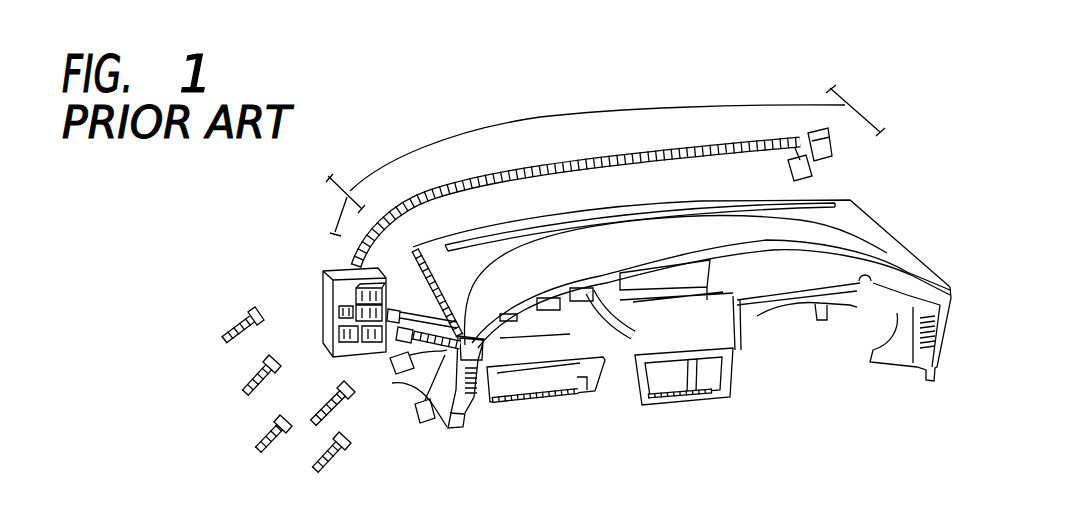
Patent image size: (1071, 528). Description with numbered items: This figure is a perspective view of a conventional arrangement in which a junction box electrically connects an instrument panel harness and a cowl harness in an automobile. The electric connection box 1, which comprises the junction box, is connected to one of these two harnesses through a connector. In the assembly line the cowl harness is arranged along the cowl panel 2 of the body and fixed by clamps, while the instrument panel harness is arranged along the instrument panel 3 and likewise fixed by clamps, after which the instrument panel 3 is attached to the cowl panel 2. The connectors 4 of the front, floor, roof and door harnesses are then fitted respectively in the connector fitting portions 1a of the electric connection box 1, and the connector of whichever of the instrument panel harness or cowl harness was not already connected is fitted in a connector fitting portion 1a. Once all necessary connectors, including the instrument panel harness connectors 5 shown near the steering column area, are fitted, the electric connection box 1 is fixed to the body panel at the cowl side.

The electric connection box 1 is at (339, 300).
The connector fitting portion 1a is at (336, 338).
The cowl panel 2 is at (398, 163).
The instrument panel 3 is at (800, 228).
The connector 4 is at (300, 392).
The connectors of wire harness W/H1 5 is at (396, 328).